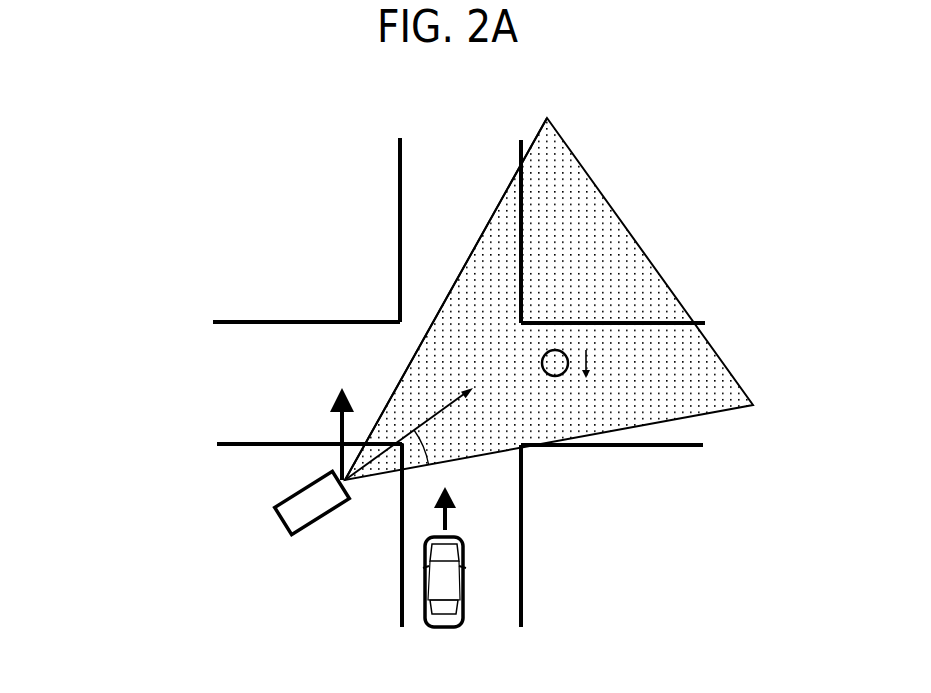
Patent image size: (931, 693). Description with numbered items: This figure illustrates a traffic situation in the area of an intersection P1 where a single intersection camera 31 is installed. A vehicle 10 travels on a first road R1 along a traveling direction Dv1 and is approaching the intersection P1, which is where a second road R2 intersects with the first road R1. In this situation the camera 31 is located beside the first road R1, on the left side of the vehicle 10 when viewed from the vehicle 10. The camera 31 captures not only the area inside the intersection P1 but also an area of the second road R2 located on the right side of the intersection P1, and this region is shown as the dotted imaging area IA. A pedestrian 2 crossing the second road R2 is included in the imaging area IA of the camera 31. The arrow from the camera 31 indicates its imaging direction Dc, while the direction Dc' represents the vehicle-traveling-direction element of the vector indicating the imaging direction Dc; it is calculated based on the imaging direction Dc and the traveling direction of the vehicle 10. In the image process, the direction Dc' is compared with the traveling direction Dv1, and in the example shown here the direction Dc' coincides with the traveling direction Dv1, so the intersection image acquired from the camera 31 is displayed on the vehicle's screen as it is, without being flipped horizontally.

The imaging area IA is at (623, 227).
The intersection P1 is at (428, 322).
The first road R1 is at (413, 173).
The second road R2 is at (297, 353).
The pedestrian 2 is at (560, 350).
The direction of vehicle-traveling-direction element of imaging direction vector Dc' is at (192, 457).
The imaging direction Dc is at (405, 472).
The intersection camera 31 is at (278, 520).
The traveling direction Dv1 is at (443, 520).
The vehicle 10 is at (423, 580).